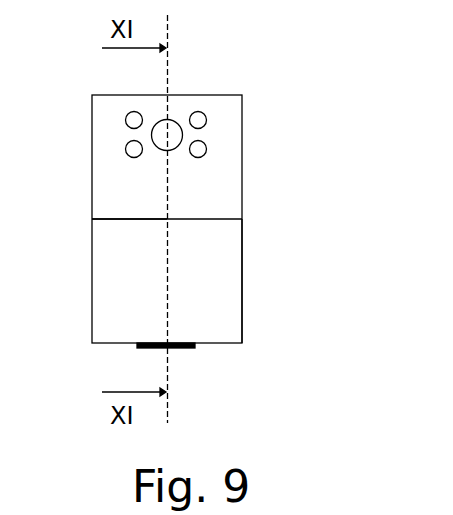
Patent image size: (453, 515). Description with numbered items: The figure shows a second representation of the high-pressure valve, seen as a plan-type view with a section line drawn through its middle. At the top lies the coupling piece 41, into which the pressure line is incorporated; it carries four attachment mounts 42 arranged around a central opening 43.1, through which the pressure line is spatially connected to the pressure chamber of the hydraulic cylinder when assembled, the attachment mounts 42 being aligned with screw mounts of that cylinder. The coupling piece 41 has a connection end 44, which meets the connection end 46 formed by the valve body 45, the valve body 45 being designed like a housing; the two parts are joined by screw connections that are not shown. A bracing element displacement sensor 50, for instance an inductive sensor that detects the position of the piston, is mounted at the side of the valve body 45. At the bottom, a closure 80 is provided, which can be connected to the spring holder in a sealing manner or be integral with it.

The coupling piece 41 is at (109, 140).
The attachment mounts 42 is at (200, 112).
The opening 43.1 is at (170, 120).
The connection end 44 is at (127, 221).
The valve body 45 is at (227, 310).
The connection end 46 is at (205, 217).
The displacement sensor 50 is at (242, 253).
The closure 80 is at (177, 349).